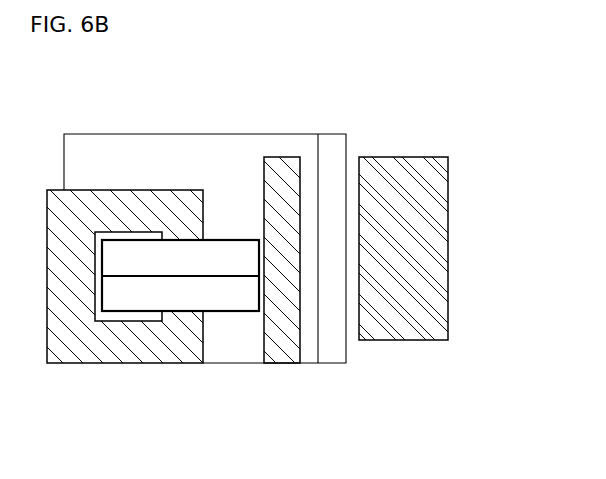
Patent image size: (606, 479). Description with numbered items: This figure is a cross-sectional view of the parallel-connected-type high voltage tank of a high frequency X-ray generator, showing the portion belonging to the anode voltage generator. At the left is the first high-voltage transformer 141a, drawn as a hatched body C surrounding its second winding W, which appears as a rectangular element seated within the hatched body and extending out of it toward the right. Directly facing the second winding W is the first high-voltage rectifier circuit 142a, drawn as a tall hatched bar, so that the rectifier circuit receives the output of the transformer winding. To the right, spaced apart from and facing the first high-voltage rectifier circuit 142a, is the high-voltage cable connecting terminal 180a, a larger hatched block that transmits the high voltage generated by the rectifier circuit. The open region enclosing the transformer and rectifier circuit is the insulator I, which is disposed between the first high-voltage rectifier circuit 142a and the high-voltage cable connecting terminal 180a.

The insulator I is at (183, 153).
The core C is at (167, 354).
The second winding W is at (231, 298).
The first high-voltage transformer 141a is at (242, 421).
The first high-voltage rectifier circuit 142a is at (282, 170).
The high-voltage cable connecting terminal 180a is at (418, 245).